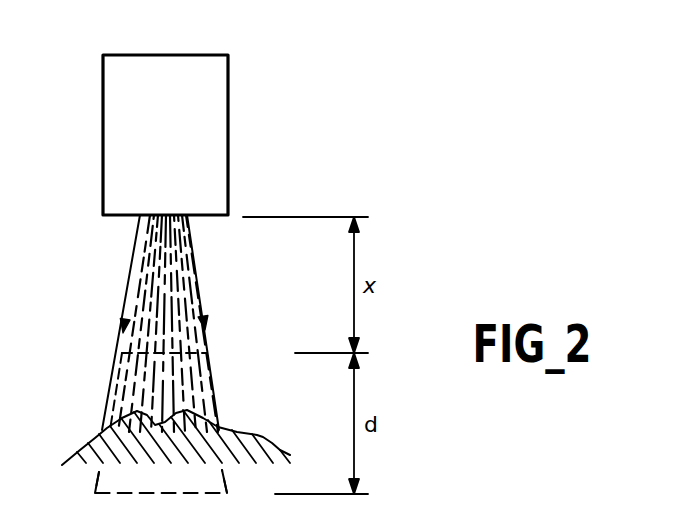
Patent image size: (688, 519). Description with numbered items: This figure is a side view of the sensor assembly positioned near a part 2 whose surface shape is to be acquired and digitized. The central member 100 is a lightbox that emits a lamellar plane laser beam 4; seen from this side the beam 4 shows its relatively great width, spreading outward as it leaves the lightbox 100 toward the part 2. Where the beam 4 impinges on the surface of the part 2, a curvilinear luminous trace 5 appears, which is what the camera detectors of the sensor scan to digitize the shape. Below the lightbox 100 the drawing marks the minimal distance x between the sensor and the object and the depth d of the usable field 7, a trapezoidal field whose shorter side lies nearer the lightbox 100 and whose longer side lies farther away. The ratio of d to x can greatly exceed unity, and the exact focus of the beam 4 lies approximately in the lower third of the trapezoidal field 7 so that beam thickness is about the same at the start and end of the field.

The central member 100 is at (217, 110).
The lamellar plane laser beam 4 is at (175, 305).
The curvilinear luminous trace 5 is at (181, 410).
The usable field 7 is at (112, 381).
The part 2 is at (258, 440).